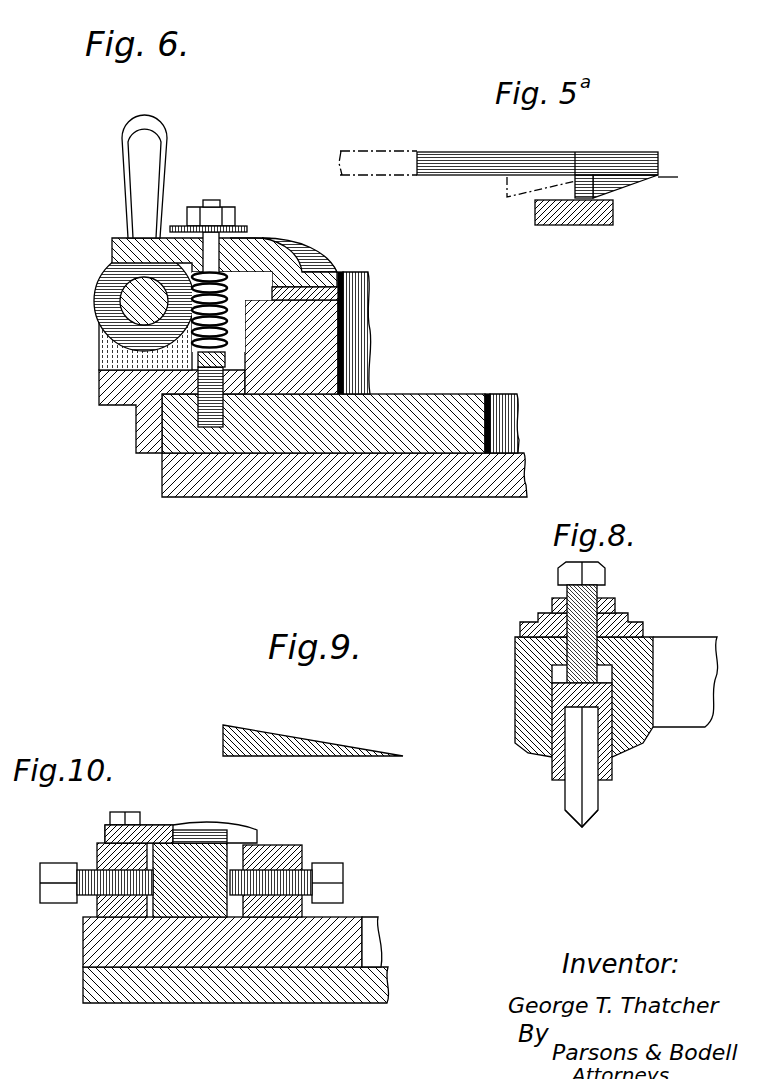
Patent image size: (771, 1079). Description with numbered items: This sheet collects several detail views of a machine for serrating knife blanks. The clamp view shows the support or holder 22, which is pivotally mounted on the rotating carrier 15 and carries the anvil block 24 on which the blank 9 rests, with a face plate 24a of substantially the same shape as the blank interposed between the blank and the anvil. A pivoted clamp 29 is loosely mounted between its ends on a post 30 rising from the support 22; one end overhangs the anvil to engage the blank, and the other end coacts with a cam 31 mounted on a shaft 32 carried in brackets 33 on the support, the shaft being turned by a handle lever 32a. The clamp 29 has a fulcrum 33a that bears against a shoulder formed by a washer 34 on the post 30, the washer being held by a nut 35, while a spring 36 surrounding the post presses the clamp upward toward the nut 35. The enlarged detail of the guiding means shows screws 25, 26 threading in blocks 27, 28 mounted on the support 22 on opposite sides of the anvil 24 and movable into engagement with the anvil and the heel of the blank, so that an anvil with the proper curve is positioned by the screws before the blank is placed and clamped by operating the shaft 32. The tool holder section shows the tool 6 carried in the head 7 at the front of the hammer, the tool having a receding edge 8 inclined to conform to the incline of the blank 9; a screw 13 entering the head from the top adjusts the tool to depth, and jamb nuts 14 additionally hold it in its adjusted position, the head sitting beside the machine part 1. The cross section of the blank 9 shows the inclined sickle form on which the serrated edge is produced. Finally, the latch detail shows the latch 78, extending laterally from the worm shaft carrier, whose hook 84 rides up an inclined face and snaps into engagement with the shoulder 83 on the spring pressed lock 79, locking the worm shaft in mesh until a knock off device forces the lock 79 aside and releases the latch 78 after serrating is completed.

In FIG. 8, the table plate 1 is at (683, 648).
In FIG. 8, the tool 6 is at (590, 793).
In FIG. 8, the head 7 is at (523, 685).
In FIG. 8, the receding edge 8 is at (583, 819).
In FIG. 6, the blank 9 is at (340, 271).
In FIG. 9, the blank 9 is at (305, 736).
In FIG. 10, the blank 9 is at (194, 826).
In FIG. 8, the screw 13 is at (598, 578).
In FIG. 8, the jamb nuts 14 is at (627, 627).
In FIG. 6, the carrier 15 is at (312, 489).
In FIG. 10, the carrier 15 is at (325, 992).
In FIG. 6, the support 22 is at (154, 450).
In FIG. 10, the support 22 is at (330, 931).
In FIG. 6, the anvil block 24 is at (335, 341).
In FIG. 10, the anvil block 24 is at (207, 865).
In FIG. 6, the face plate 24a is at (358, 297).
In FIG. 10, the face plate 24a is at (204, 834).
In FIG. 10, the screw 25 is at (328, 873).
In FIG. 10, the screw 26 is at (50, 872).
In FIG. 10, the block 27 is at (137, 857).
In FIG. 10, the block 28 is at (287, 853).
In FIG. 6, the pivoted clamp 29 is at (262, 252).
In FIG. 6, the post 30 is at (193, 328).
In FIG. 6, the cam 31 is at (125, 284).
In FIG. 6, the shaft 32 is at (133, 297).
In FIG. 6, the handle lever 32a is at (133, 160).
In FIG. 6, the bracket 33 is at (150, 340).
In FIG. 6, the fulcrum 33a is at (243, 229).
In FIG. 6, the washer 34 is at (181, 226).
In FIG. 6, the nut 35 is at (214, 214).
In FIG. 6, the spring 36 is at (196, 359).
In FIG. 5A, the latch 78 is at (483, 160).
In FIG. 5A, the lock 79 is at (613, 208).
In FIG. 5A, the shoulder 83 is at (584, 191).
In FIG. 5A, the hook 84 is at (505, 186).